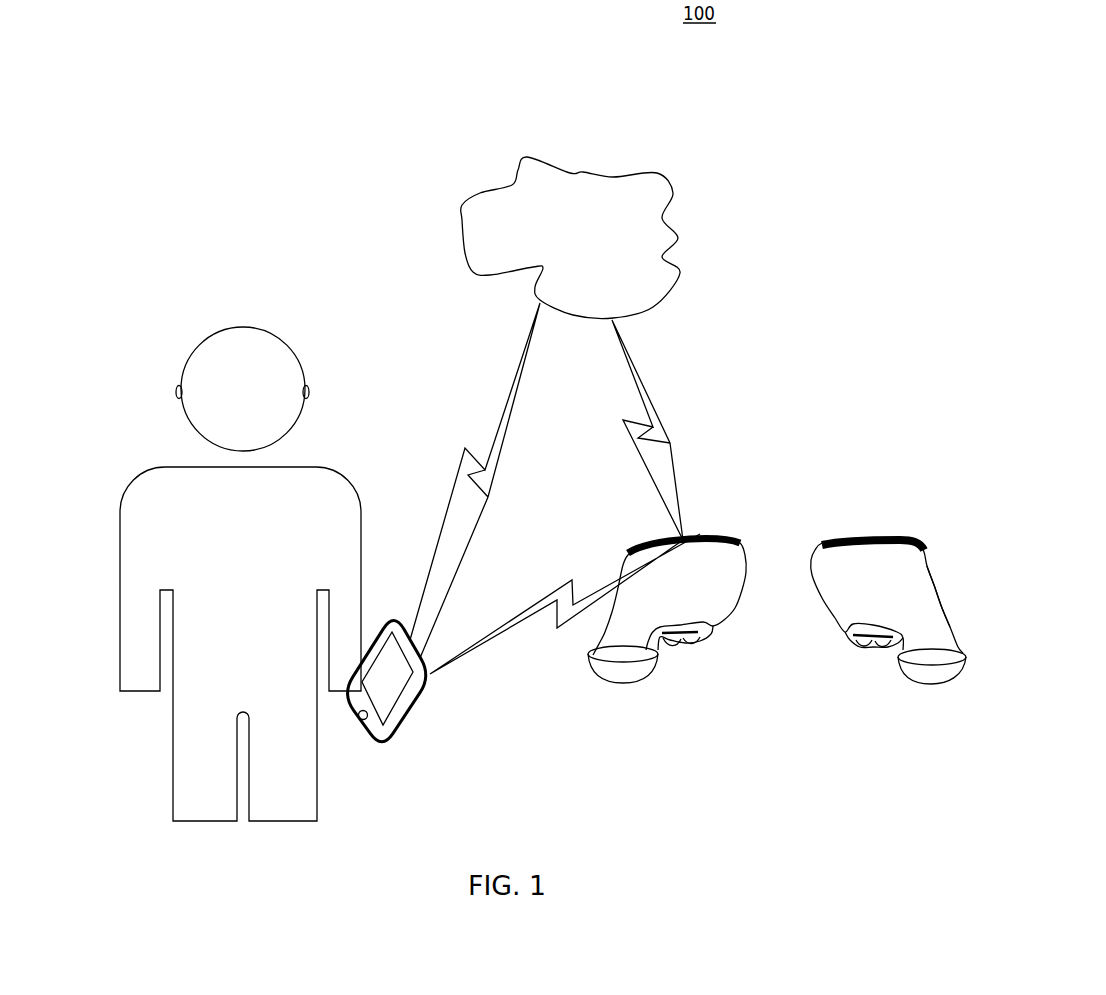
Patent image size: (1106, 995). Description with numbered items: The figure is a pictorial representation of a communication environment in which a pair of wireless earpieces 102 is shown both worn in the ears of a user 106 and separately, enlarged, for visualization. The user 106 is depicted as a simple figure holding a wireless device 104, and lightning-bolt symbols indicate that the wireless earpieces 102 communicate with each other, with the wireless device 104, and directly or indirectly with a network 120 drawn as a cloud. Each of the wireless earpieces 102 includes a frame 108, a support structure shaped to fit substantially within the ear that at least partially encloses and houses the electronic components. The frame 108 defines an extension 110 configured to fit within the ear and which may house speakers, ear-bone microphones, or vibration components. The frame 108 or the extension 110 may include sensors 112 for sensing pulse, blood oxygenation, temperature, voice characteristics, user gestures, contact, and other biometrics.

The wireless earpieces 102 is at (178, 390).
The wireless device 104 is at (402, 727).
The user 106 is at (258, 545).
The frame 108 is at (918, 562).
The extension 110 is at (930, 623).
The sensors 112 is at (873, 646).
The network 120 is at (587, 251).